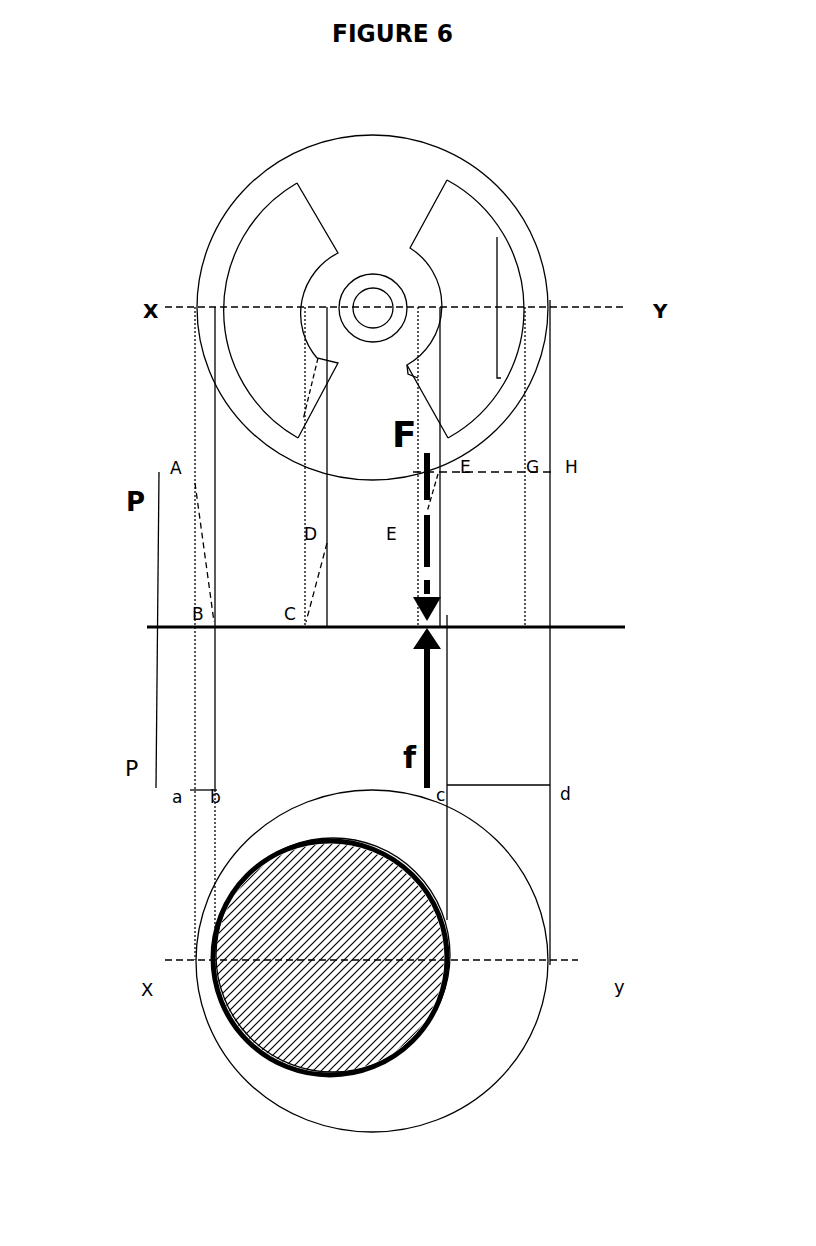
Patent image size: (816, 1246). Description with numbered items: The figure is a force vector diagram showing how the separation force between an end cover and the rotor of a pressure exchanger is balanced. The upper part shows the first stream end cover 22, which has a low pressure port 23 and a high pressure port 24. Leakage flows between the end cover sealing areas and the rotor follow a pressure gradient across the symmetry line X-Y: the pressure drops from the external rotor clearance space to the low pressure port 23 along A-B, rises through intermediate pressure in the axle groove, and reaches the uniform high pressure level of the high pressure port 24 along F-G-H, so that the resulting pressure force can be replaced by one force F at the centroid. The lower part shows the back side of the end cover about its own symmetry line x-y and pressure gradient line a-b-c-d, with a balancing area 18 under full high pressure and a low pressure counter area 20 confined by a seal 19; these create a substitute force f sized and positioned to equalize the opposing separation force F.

The balancing area 18 is at (498, 1027).
The seal 19 is at (443, 903).
The low pressure counter area 20 is at (268, 903).
The first stream end cover 22 is at (328, 143).
The low pressure port 23 is at (283, 263).
The high pressure port 24 is at (470, 267).